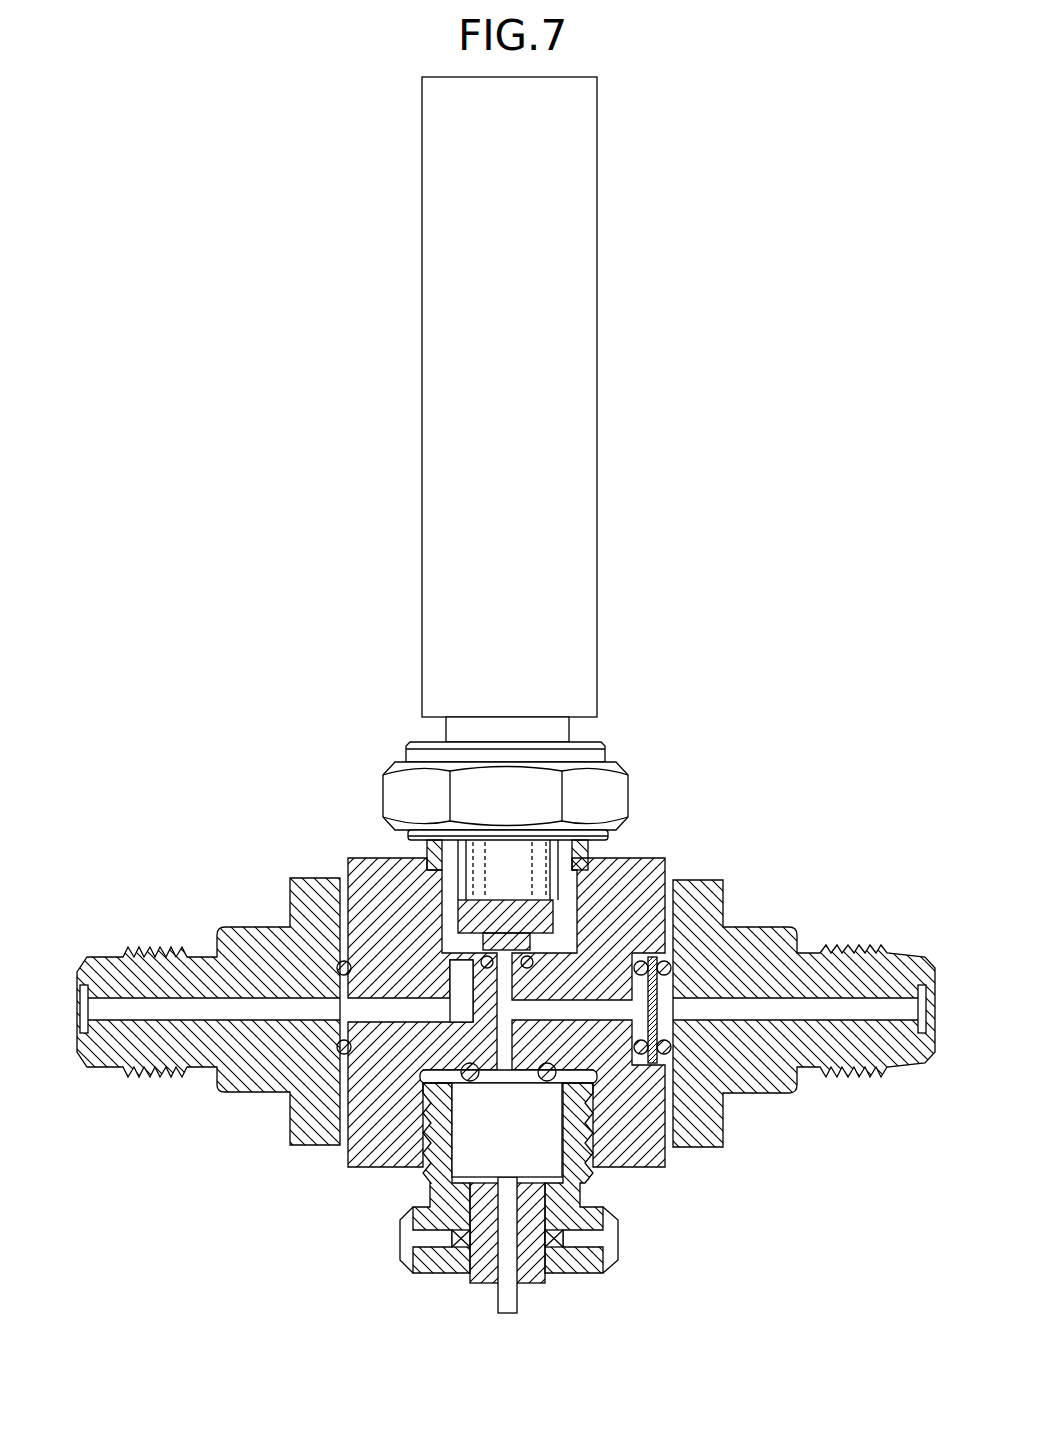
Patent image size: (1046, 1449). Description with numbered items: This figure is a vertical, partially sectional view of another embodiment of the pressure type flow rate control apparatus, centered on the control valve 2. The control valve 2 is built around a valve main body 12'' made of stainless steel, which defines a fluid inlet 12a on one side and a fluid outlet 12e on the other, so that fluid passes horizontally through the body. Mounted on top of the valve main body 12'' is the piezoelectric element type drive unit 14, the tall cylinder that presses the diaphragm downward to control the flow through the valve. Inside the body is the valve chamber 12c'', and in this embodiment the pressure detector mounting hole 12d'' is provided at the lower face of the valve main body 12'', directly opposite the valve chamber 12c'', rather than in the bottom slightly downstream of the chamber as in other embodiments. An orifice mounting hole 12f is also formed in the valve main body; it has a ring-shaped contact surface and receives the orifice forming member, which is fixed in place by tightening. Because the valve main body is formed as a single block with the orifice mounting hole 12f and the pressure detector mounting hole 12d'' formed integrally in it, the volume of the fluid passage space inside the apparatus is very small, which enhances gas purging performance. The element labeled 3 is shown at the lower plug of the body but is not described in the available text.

The piezoelectric element type drive unit 14 is at (598, 227).
The control valve 2 is at (284, 799).
The valve main body 12'' is at (532, 985).
The fluid inlet 12a is at (143, 1010).
The fluid outlet 12e is at (858, 1010).
The orifice mounting hole 12f is at (630, 1077).
The valve chamber 12c'' is at (491, 1036).
The pressure detector mounting hole 12d'' is at (507, 1126).
The plug 3 is at (437, 1155).